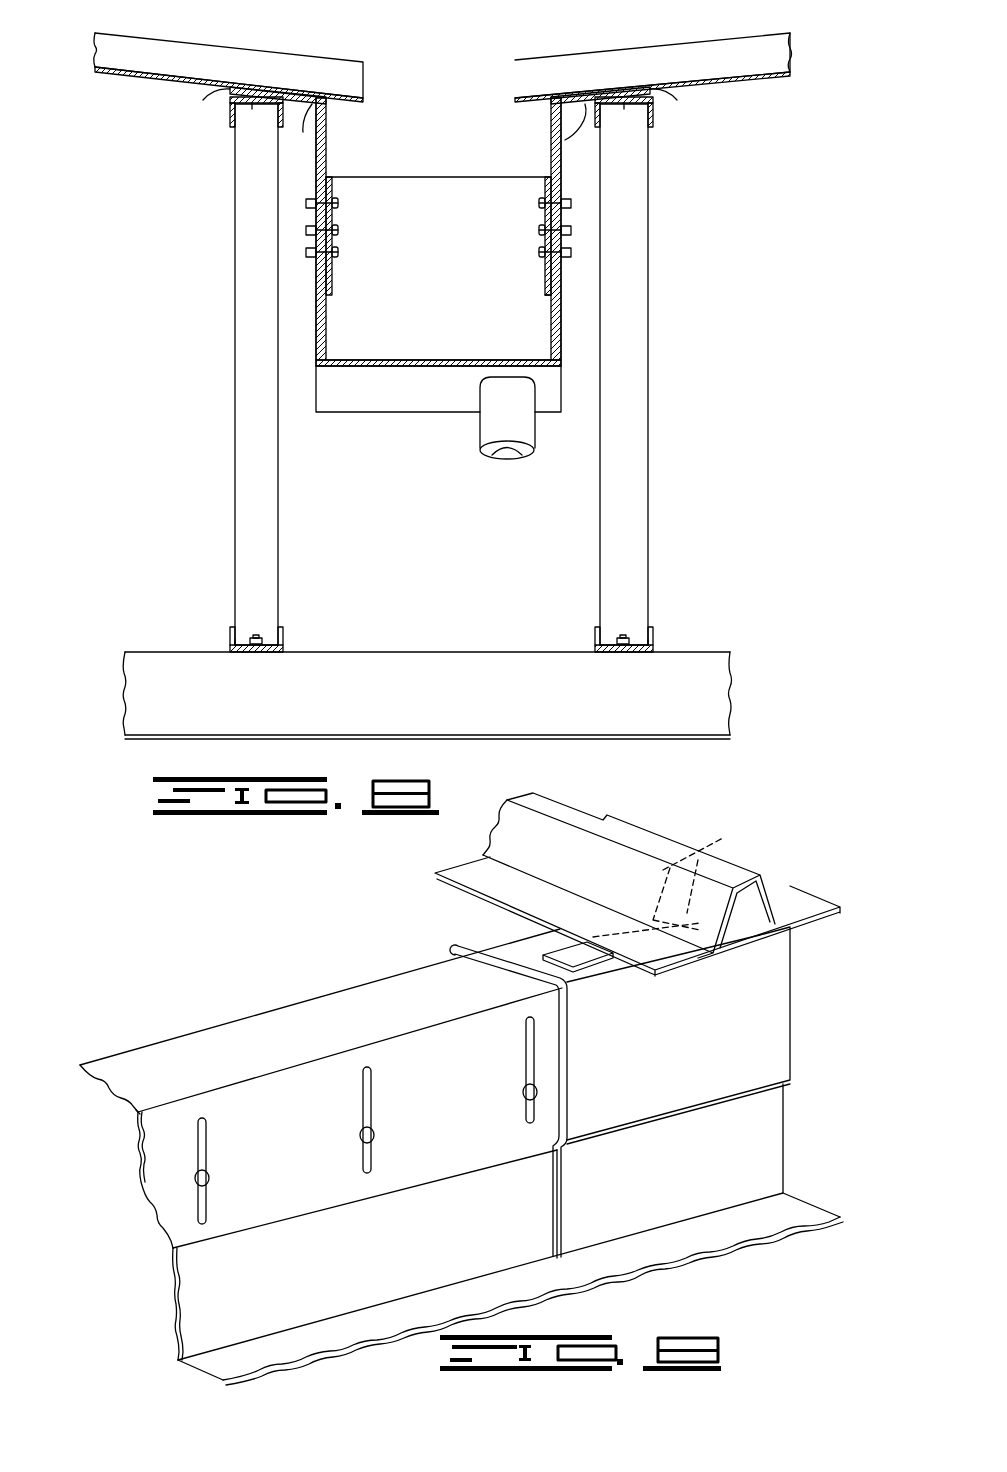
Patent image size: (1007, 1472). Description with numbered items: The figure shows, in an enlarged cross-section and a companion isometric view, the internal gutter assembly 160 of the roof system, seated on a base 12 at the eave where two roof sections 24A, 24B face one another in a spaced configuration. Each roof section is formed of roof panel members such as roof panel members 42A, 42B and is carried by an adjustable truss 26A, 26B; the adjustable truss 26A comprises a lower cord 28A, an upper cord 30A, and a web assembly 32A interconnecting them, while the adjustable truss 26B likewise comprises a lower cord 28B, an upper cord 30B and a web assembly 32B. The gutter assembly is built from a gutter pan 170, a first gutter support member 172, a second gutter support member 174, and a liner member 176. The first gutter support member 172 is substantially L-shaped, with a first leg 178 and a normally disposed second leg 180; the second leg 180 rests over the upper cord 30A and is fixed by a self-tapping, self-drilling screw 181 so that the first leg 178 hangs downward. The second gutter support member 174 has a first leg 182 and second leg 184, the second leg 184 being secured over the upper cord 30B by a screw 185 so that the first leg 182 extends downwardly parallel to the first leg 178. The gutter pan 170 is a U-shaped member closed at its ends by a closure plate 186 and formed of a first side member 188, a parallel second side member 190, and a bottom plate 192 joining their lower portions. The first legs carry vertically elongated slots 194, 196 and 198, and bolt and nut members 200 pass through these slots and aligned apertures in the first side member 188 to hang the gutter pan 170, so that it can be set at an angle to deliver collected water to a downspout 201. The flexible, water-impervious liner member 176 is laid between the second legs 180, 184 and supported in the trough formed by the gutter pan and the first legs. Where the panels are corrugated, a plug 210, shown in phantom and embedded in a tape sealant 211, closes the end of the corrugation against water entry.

In FIG. 8, the base 12 is at (405, 678).
In FIG. 8, the roof section 24A is at (186, 40).
In FIG. 9, the roof section 24A is at (626, 804).
In FIG. 8, the roof section 24B is at (675, 42).
In FIG. 8, the adjustable truss 26A is at (226, 377).
In FIG. 8, the adjustable truss 26B is at (656, 387).
In FIG. 8, the lower cord 28A is at (286, 640).
In FIG. 8, the lower cord 28B is at (653, 640).
In FIG. 8, the upper cord 30A is at (230, 116).
In FIG. 8, the upper cord 30B is at (653, 116).
In FIG. 8, the web assembly 32A is at (235, 255).
In FIG. 8, the web assembly 32B is at (648, 335).
In FIG. 8, the roof panel member 42A is at (249, 47).
In FIG. 9, the roof panel member 42A is at (543, 805).
In FIG. 8, the roof panel member 42B is at (577, 58).
In FIG. 8, the internal gutter assembly 160 is at (566, 293).
In FIG. 8, the gutter pan 170 is at (365, 371).
In FIG. 9, the gutter pan 170 is at (168, 1311).
In FIG. 8, the first gutter support member 172 is at (316, 163).
In FIG. 9, the first gutter support member 172 is at (418, 1087).
In FIG. 8, the second gutter support member 174 is at (562, 163).
In FIG. 8, the liner member 176 is at (338, 355).
In FIG. 8, the first leg 178 is at (318, 147).
In FIG. 9, the first leg 178 is at (146, 1186).
In FIG. 8, the second leg 180 is at (330, 128).
In FIG. 9, the second leg 180 is at (240, 1037).
In FIG. 8, the self-tapping, self-drilling screw 181 is at (254, 93).
In FIG. 8, the first leg 182 is at (598, 147).
In FIG. 8, the second leg 184 is at (598, 147).
In FIG. 8, the self-tapping, self-drilling screw 185 is at (625, 97).
In FIG. 8, the closure plate 186 is at (424, 197).
In FIG. 8, the first side member 188 is at (316, 322).
In FIG. 9, the first side member 188 is at (367, 1260).
In FIG. 8, the second side member 190 is at (564, 306).
In FIG. 8, the bottom plate 192 is at (438, 372).
In FIG. 9, the bottom plate 192 is at (180, 1367).
In FIG. 9, the elongated slot 194 is at (206, 1134).
In FIG. 9, the elongated slot 196 is at (370, 1085).
In FIG. 9, the elongated slot 198 is at (534, 1034).
In FIG. 8, the bolt and nut members 200 is at (334, 253).
In FIG. 9, the bolt and nut members 200 is at (205, 1175).
In FIG. 8, the downspout 201 is at (535, 430).
In FIG. 9, the plug 210 is at (728, 837).
In FIG. 9, the tape sealant 211 is at (565, 954).